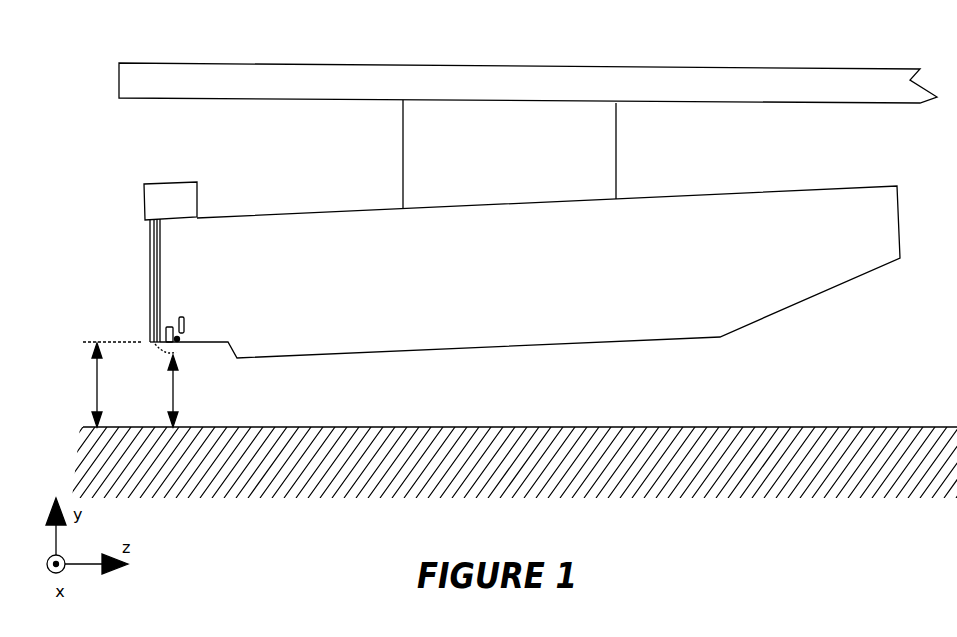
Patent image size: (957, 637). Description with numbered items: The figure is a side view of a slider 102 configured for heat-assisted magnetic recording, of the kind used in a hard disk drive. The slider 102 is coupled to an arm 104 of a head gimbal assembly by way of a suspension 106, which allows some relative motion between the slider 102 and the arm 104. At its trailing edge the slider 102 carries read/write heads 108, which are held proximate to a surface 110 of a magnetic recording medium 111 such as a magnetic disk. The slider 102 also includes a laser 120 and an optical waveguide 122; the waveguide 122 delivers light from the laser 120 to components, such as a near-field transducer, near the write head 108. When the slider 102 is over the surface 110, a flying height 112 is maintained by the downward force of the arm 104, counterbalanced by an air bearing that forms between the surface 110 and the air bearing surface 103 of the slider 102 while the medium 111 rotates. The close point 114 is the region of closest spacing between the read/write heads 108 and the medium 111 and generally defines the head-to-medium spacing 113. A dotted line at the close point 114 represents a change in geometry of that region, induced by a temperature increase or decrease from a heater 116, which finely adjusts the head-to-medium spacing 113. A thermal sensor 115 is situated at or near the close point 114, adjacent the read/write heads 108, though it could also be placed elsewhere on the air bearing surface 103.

The slider 102 is at (770, 203).
The air bearing surface 103 is at (352, 355).
The arm 104 is at (835, 77).
The suspension 106 is at (616, 147).
The read/write heads 108 is at (167, 327).
The surface 110 is at (775, 427).
The magnetic recording medium 111 is at (790, 487).
The flying height 112 is at (95, 384).
The head-to-medium spacing 113 is at (152, 391).
The close point 114 is at (180, 352).
The thermal sensor 115 is at (179, 339).
The heater 116 is at (182, 315).
The laser 120 is at (170, 193).
The optical waveguide 122 is at (157, 252).